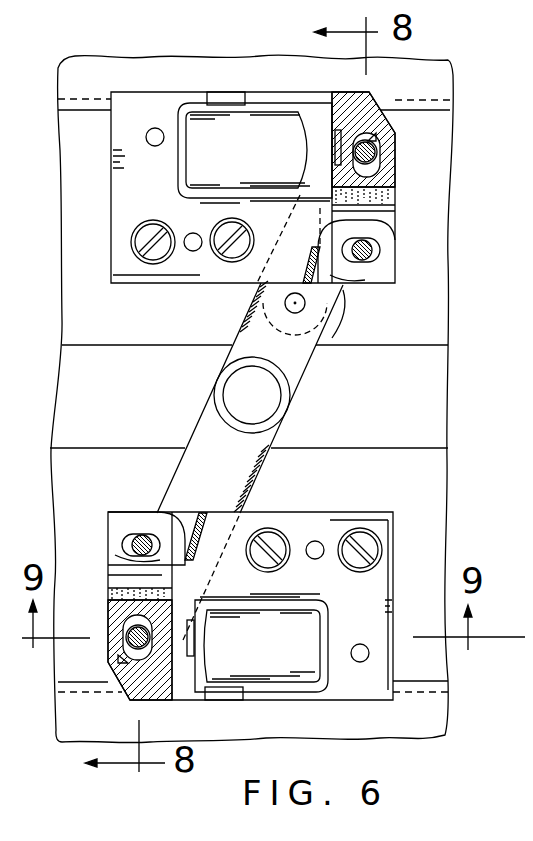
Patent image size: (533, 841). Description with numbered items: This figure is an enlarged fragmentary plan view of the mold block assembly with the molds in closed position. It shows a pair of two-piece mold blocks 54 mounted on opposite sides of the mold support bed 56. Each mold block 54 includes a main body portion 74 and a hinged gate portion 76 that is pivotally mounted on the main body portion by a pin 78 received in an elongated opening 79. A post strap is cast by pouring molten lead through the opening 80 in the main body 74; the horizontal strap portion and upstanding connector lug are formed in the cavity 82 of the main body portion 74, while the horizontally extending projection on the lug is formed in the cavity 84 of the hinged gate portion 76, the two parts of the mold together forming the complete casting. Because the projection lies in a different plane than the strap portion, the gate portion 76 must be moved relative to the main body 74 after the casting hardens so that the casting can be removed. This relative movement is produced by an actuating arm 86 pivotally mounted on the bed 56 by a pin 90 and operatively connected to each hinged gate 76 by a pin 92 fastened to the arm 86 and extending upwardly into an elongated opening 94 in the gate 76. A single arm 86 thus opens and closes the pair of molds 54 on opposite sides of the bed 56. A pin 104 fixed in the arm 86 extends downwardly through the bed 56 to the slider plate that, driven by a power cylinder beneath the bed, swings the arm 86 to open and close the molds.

The mold block 54 is at (90, 199).
The mold support bed 56 is at (77, 393).
The main body portion 74 is at (147, 112).
The hinged gate portion 76 is at (395, 213).
The pin 78 is at (360, 260).
The elongated opening 79 is at (378, 250).
The opening 80 is at (188, 172).
The cavity 82 is at (248, 160).
The cavity 84 is at (335, 148).
The actuating arm 86 is at (300, 365).
The pin 90 is at (235, 391).
The pin 92 is at (373, 153).
The elongated opening 94 is at (376, 134).
The pin 104 is at (290, 300).